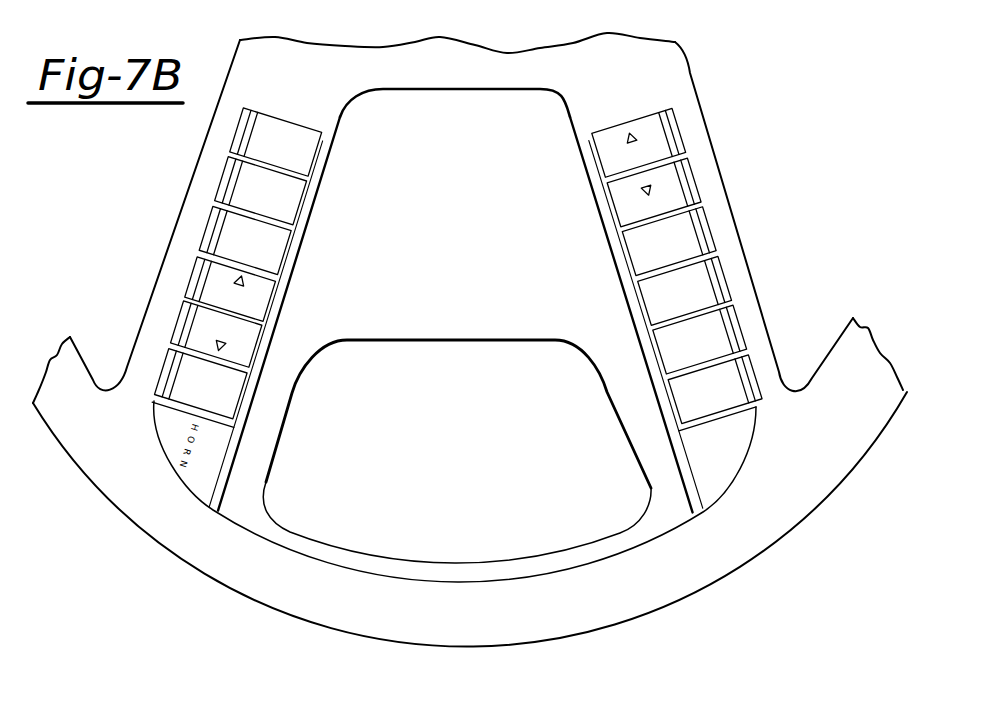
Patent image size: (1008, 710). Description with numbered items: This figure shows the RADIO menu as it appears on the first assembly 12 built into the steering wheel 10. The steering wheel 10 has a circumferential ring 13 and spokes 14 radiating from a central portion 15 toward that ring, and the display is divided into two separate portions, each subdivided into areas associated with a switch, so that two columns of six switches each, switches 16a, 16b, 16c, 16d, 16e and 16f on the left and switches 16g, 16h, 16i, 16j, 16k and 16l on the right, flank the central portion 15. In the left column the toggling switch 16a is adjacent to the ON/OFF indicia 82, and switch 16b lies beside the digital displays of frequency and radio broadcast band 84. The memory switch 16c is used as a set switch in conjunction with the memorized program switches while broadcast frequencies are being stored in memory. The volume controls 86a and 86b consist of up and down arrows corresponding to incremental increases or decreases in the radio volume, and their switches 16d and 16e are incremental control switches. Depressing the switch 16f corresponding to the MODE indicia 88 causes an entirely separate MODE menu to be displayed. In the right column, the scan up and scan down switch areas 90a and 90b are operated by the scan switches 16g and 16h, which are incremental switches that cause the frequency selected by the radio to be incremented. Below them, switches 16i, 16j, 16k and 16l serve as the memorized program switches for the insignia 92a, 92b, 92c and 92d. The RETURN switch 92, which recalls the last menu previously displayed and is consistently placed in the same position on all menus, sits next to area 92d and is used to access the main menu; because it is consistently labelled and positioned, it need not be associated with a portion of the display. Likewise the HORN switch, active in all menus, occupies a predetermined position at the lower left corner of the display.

The steering wheel 10 is at (213, 593).
The first assembly 12 is at (300, 88).
The circumferential ring 13 is at (445, 593).
The spokes 14 is at (253, 477).
The central portion 15 is at (455, 333).
The switch 16a is at (240, 122).
The switch 16b is at (230, 172).
The memory switch 16c is at (208, 218).
The switch 16d is at (197, 260).
The switch 16e is at (186, 300).
The switch 16f is at (168, 366).
The scan switch 16g is at (680, 132).
The scan switch 16h is at (697, 183).
The switch 16i is at (707, 235).
The switch 16j is at (722, 282).
The switch 16k is at (733, 333).
The switch 16l is at (750, 383).
The indicia 82 is at (308, 153).
The digital displays of frequency and radio broadcast band 84 is at (290, 197).
The volume control 86a is at (250, 287).
The volume control 86b is at (232, 341).
The indicia 88 is at (222, 393).
The scan up switch area 90a is at (620, 151).
The scan down switch area 90b is at (633, 203).
The insignia 92a is at (647, 255).
The insignia 92b is at (673, 292).
The insignia 92c is at (683, 340).
The insignia 92d is at (700, 395).
The RETURN switch 92 is at (733, 477).